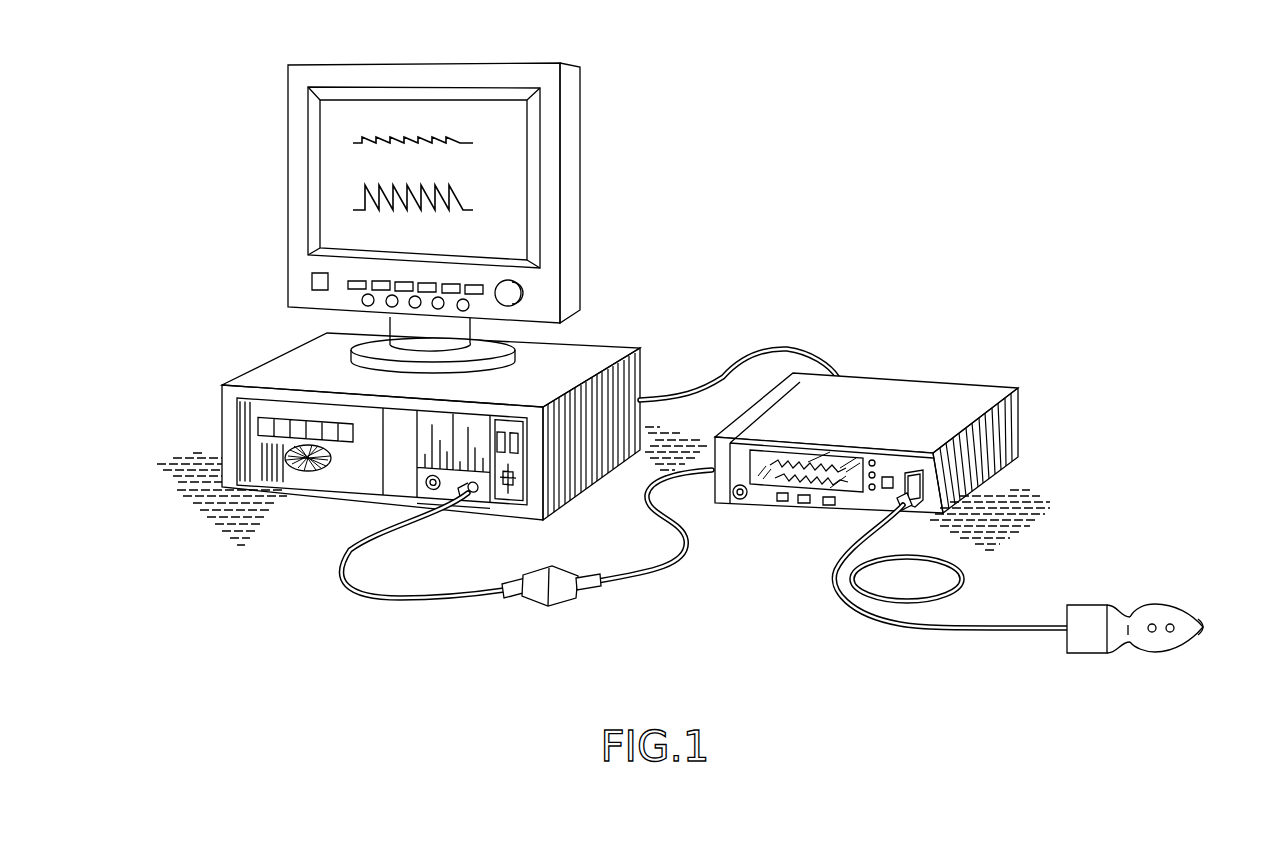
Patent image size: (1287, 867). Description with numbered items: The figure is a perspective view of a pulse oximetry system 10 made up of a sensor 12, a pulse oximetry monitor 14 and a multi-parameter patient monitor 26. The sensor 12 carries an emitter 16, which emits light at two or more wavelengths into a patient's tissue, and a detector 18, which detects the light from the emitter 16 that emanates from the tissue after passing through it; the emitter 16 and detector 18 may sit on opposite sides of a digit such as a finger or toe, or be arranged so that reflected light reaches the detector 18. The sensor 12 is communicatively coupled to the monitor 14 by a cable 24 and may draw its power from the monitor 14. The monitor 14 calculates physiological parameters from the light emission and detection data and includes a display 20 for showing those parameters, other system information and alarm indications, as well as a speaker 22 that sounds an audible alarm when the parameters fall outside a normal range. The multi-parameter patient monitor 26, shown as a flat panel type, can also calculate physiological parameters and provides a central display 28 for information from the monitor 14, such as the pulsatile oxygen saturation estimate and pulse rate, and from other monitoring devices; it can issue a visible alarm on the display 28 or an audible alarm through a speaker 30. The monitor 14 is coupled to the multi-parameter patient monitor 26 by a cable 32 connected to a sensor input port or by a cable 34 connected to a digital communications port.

The pulse oximetry system 10 is at (882, 178).
The sensor 12 is at (1157, 617).
The pulse oximetry monitor 14 is at (861, 463).
The emitter 16 is at (1152, 633).
The detector 18 is at (1170, 633).
The display 20 is at (775, 480).
The speaker 22 is at (738, 500).
The cable 24 is at (850, 618).
The multi-parameter patient monitor 26 is at (415, 218).
The display 28 is at (340, 198).
The speaker 30 is at (308, 472).
The cable 32 is at (638, 578).
The cable 34 is at (783, 343).